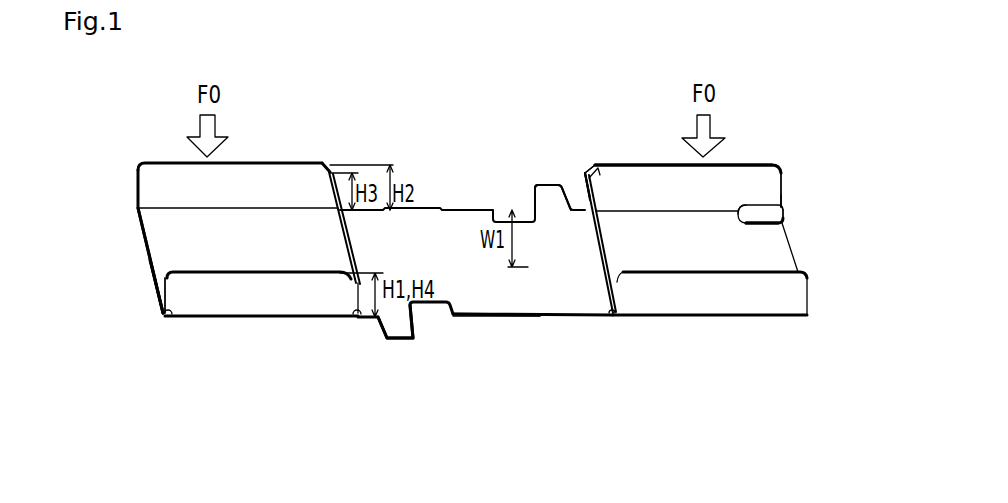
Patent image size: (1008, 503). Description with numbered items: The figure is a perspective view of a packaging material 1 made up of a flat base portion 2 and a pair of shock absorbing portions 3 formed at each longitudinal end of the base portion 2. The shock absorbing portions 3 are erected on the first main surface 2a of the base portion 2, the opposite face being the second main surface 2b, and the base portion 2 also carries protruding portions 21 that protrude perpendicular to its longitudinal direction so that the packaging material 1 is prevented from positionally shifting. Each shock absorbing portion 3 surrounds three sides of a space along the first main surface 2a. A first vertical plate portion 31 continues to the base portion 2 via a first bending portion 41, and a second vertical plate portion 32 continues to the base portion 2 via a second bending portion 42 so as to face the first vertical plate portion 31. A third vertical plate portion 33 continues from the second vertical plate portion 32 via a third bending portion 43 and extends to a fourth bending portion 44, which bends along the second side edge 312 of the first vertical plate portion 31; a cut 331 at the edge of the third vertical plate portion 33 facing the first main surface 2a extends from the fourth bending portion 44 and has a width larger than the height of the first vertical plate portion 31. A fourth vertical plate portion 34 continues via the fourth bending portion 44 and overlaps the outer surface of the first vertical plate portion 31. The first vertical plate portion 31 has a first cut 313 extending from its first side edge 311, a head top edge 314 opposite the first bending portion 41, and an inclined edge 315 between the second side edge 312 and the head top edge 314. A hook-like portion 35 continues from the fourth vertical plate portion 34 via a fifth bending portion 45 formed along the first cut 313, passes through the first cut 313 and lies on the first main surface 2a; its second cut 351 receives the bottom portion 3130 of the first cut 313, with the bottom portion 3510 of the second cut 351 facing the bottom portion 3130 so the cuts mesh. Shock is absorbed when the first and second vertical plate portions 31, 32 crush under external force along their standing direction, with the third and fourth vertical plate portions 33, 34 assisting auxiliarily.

The packaging material 1 is at (760, 88).
The base portion 2 is at (468, 219).
The first main surface 2a is at (507, 297).
The second main surface 2b is at (487, 317).
The protruding portion 21 is at (530, 200).
The shock absorbing portion 3 is at (132, 159).
The first vertical plate portion 31 is at (208, 267).
The first side edge 311 is at (157, 287).
The second side edge 312 is at (583, 193).
The first cut 313 is at (780, 202).
The head top edge 314 is at (672, 163).
The inclined edge 315 is at (600, 178).
The second vertical plate portion 32 is at (213, 197).
The third vertical plate portion 33 is at (333, 225).
The cut 331 is at (340, 262).
The fourth vertical plate portion 34 is at (220, 300).
The hook-like portion 35 is at (767, 213).
The second cut 351 is at (738, 207).
The bottom portion of the second cut 3510 is at (780, 215).
The bottom portion of the first cut 3130 is at (763, 227).
The first bending portion 41 is at (267, 317).
The second bending portion 42 is at (260, 210).
The third bending portion 43 is at (330, 188).
The fourth bending portion 44 is at (363, 320).
The fifth bending portion 45 is at (162, 308).